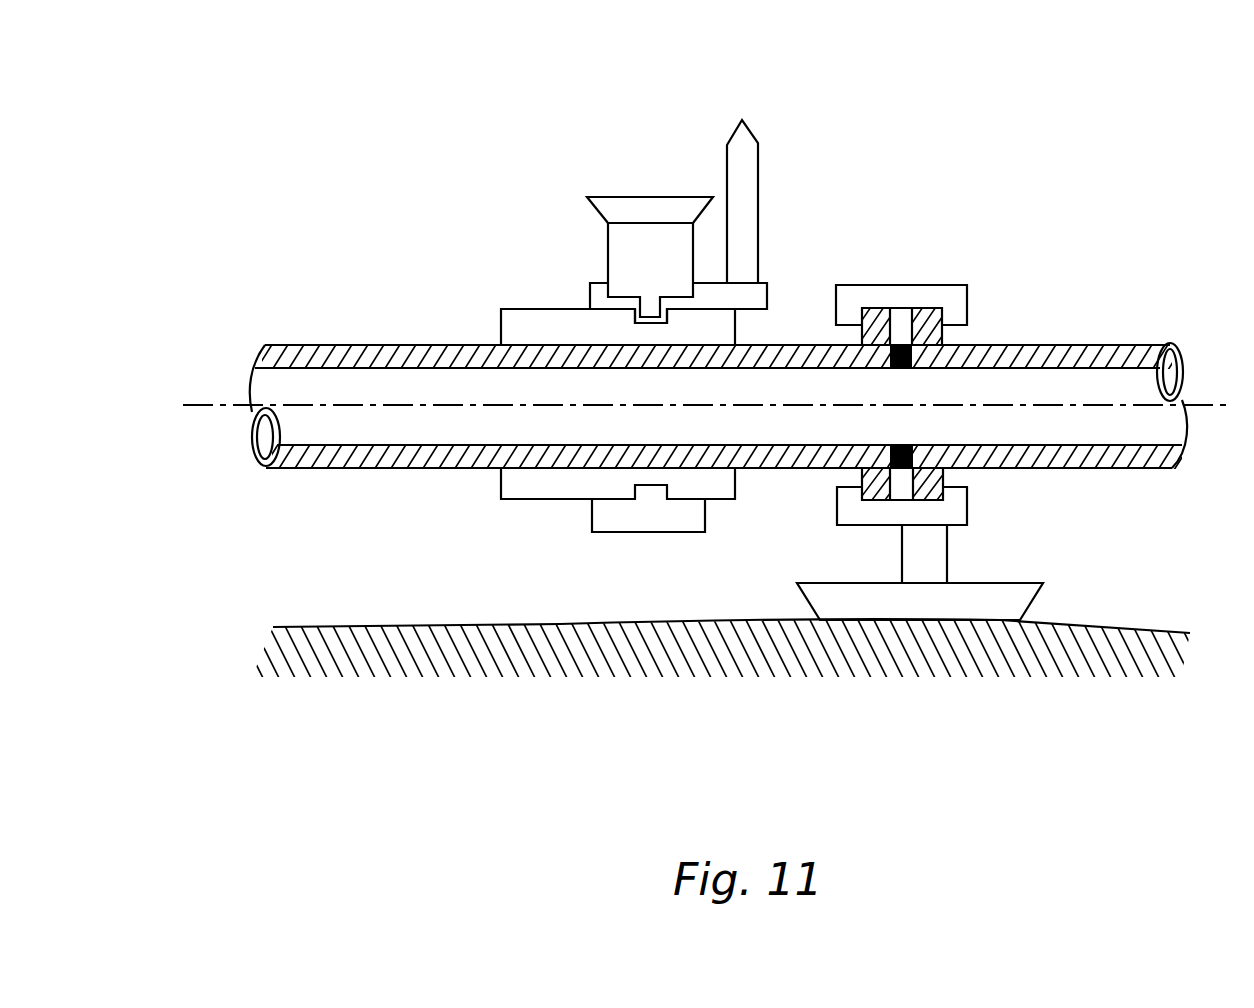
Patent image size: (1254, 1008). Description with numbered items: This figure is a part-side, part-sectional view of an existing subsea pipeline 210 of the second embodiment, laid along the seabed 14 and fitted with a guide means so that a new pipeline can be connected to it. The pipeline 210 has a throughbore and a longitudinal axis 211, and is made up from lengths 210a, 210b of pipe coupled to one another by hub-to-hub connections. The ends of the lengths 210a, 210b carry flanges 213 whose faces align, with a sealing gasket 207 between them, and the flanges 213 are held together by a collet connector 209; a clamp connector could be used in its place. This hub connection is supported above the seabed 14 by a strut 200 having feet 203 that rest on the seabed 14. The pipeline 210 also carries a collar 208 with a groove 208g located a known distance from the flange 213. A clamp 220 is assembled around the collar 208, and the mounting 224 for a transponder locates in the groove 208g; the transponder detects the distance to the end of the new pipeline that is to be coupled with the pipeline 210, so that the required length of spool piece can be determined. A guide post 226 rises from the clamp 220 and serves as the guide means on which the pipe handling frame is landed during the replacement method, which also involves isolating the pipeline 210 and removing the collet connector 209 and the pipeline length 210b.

The seabed 14 is at (1147, 648).
The strut 200 is at (935, 560).
The feet 203 is at (950, 603).
The sealing gasket 207 is at (898, 458).
The collar 208 is at (528, 323).
The groove 208g is at (667, 318).
The collet connector 209 is at (925, 300).
The pipeline 210 is at (356, 325).
The length of pipe 210a is at (268, 353).
The length of pipe 210b is at (1130, 348).
The longitudinal axis 211 is at (1050, 405).
The flanges 213 is at (878, 318).
The clamp 220 is at (650, 512).
The mounting 224 is at (620, 252).
The guide post 226 is at (742, 170).